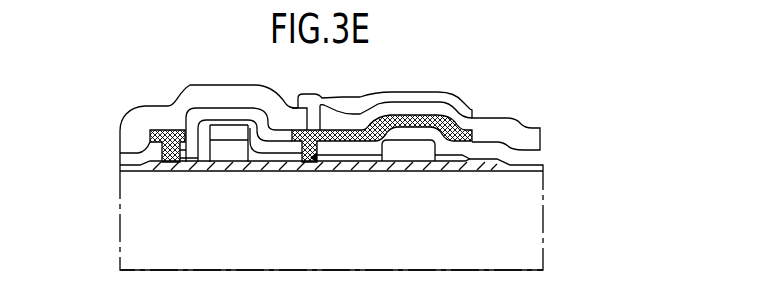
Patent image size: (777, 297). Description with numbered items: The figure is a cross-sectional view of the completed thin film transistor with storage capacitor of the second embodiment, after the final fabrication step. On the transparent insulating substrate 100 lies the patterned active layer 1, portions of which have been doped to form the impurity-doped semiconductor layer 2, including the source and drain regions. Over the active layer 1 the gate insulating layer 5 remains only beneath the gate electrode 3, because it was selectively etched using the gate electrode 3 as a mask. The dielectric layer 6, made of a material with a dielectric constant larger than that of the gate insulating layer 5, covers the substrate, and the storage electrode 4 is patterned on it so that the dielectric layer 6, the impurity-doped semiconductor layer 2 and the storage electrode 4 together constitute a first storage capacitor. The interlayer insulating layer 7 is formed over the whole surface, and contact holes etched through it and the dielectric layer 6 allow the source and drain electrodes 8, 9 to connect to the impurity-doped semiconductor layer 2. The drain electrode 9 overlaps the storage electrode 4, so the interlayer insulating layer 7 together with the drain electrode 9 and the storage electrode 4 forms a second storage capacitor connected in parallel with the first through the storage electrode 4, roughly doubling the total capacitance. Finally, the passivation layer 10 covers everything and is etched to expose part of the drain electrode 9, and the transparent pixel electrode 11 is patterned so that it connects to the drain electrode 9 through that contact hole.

The transparent insulating substrate 100 is at (532, 236).
The active layer 1 is at (245, 168).
The impurity-doped semiconductor layer 2 is at (350, 168).
The gate electrode 3 is at (225, 138).
The storage electrode 4 is at (412, 148).
The gate insulating layer 5 is at (225, 150).
The dielectric layer 6 is at (532, 169).
The interlayer insulating layer 7 is at (228, 107).
The source electrode 8 is at (176, 164).
The drain electrode 9 is at (312, 163).
The passivation layer 10 is at (528, 139).
The pixel electrode 11 is at (413, 99).